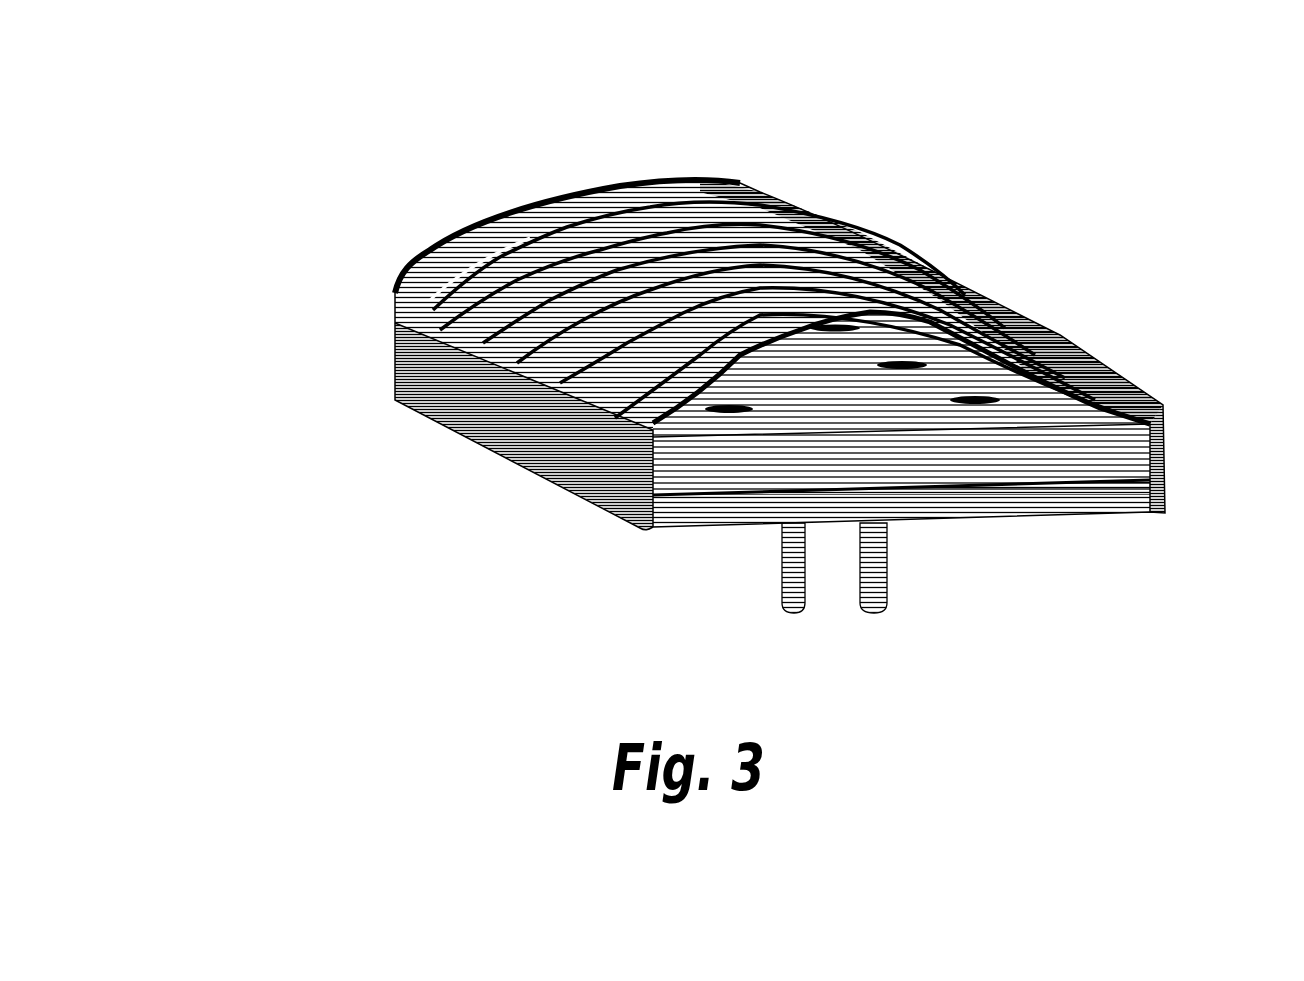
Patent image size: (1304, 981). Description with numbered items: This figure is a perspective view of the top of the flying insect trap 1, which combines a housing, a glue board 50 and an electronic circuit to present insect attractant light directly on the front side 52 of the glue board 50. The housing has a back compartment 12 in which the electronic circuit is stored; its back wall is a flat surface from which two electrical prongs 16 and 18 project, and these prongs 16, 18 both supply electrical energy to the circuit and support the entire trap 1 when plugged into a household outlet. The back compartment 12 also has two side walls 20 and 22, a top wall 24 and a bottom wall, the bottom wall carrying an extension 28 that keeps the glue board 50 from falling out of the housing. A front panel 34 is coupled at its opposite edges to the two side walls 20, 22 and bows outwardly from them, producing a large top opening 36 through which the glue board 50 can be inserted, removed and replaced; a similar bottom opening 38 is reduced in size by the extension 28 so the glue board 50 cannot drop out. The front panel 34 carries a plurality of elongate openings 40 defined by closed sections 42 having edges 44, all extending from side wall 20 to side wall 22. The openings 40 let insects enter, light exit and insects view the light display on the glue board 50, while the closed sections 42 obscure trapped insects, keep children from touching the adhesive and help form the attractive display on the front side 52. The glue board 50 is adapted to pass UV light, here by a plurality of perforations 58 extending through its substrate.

The flying insect trap 1 is at (1168, 565).
The back compartment 12 is at (530, 487).
The electrical prong 16 is at (783, 600).
The electrical prong 18 is at (880, 598).
The side wall 20 is at (1168, 425).
The side wall 22 is at (507, 423).
The top wall 24 is at (1000, 477).
The extension 28 is at (447, 300).
The front panel 34 is at (873, 232).
The top opening 36 is at (898, 333).
The bottom opening 38 is at (537, 232).
The openings 40 is at (550, 272).
The closed sections 42 is at (648, 215).
The edges 44 is at (838, 277).
The glue board 50 is at (800, 390).
The front side 52 is at (823, 366).
The perforations 58 is at (977, 397).